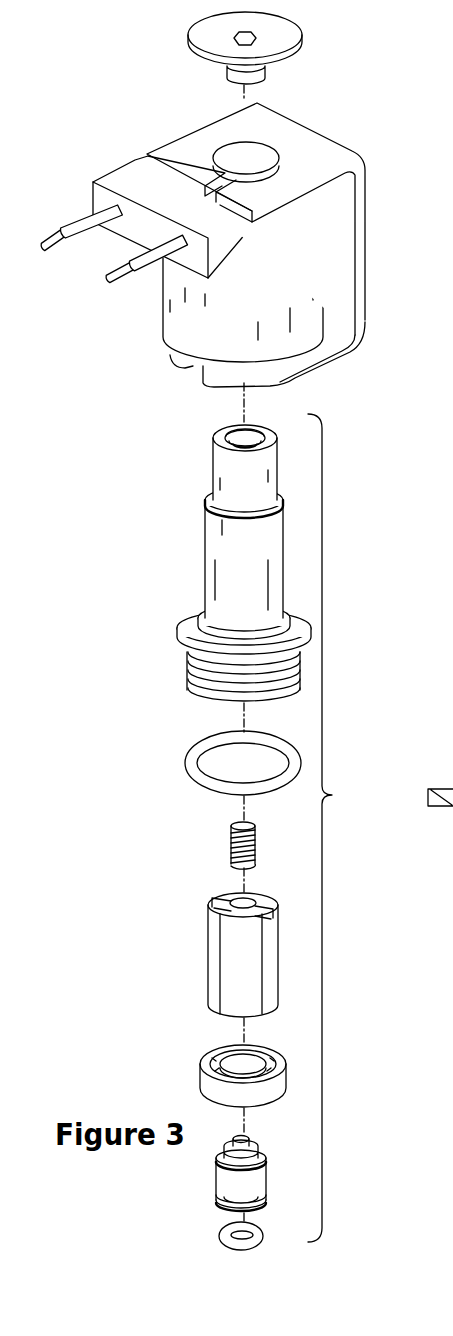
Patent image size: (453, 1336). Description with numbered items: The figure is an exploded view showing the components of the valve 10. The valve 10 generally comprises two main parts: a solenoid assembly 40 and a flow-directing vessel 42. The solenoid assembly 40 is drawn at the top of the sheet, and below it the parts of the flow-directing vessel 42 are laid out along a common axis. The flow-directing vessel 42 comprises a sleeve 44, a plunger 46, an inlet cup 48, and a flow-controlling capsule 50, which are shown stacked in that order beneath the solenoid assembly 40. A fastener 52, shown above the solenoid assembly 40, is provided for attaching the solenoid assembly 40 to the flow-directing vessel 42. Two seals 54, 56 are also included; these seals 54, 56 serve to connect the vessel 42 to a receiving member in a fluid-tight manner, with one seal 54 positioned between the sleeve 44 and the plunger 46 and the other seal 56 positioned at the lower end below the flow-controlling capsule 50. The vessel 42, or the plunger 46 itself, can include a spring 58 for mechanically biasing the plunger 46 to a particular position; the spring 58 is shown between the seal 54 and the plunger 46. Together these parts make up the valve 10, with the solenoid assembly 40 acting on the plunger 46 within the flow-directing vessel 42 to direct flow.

The valve 10 is at (118, 621).
The solenoid assembly 40 is at (363, 252).
The flow-directing vessel 42 is at (337, 828).
The sleeve 44 is at (220, 533).
The plunger 46 is at (208, 960).
The inlet cup 48 is at (200, 1080).
The flow-controlling capsule 50 is at (230, 1175).
The fastener 52 is at (295, 42).
The seal 54 is at (188, 755).
The seal 56 is at (222, 1231).
The spring 58 is at (230, 847).